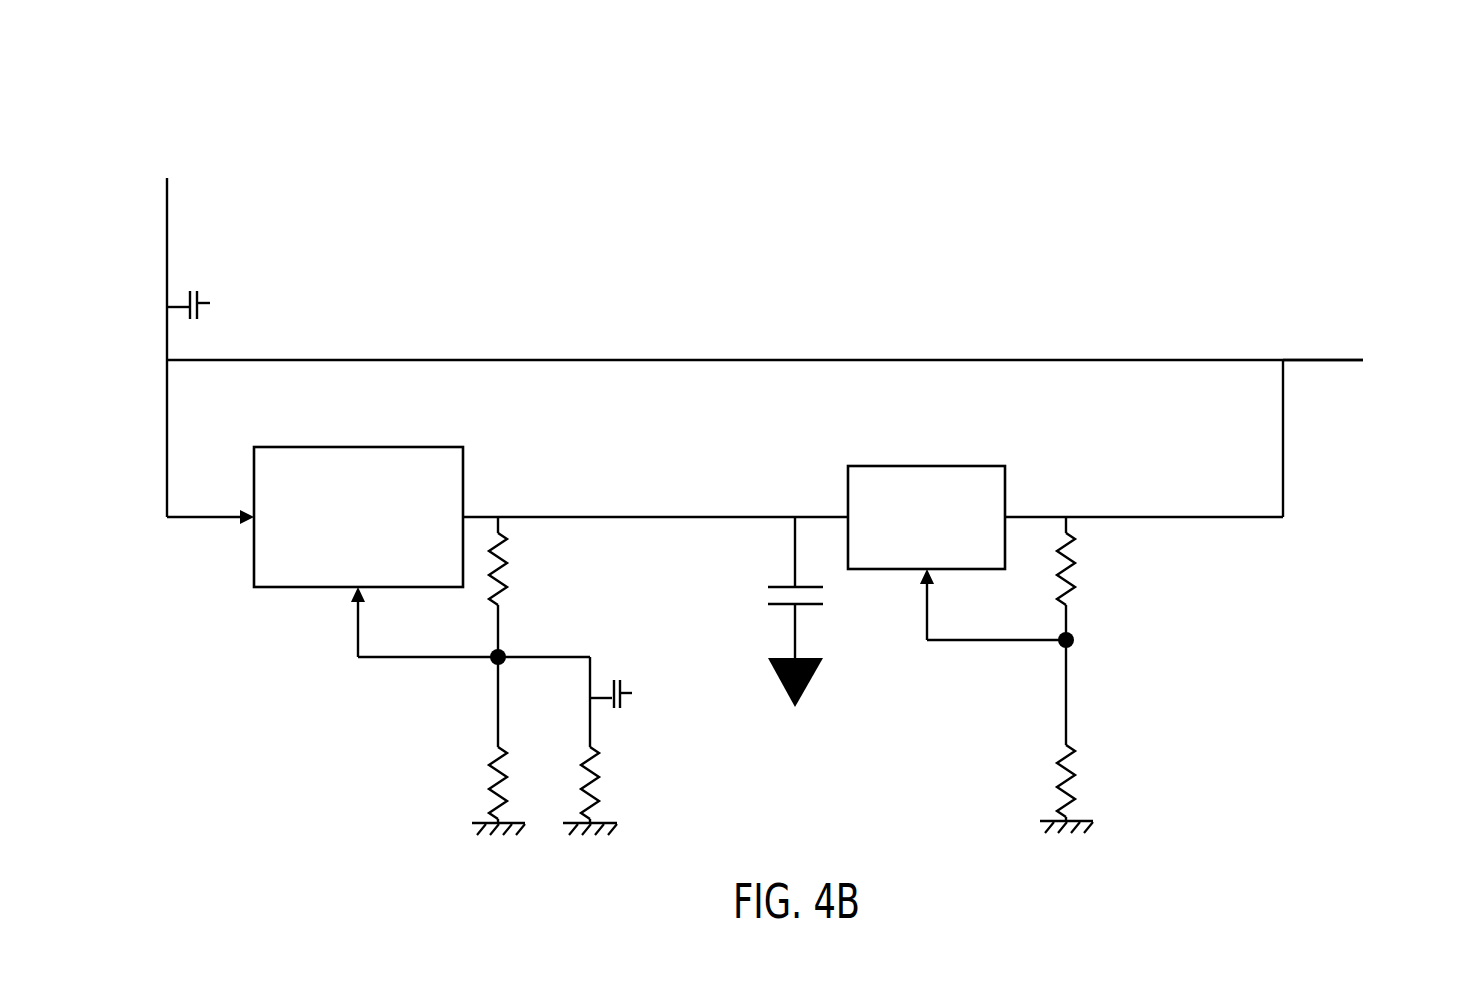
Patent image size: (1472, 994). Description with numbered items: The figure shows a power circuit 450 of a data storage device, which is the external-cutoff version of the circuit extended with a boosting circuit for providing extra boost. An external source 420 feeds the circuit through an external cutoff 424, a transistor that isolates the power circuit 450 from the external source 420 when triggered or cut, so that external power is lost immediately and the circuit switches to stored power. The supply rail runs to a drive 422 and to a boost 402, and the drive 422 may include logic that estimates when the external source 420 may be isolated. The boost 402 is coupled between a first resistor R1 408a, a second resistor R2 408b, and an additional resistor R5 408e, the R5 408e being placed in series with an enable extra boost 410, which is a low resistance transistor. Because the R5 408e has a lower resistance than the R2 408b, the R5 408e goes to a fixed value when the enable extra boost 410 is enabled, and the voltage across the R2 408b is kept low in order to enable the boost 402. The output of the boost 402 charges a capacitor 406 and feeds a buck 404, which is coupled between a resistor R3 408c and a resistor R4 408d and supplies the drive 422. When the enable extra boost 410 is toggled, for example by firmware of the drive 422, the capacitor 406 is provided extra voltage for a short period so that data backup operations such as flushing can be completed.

The power circuit 450 is at (183, 72).
The external source 420 is at (149, 173).
The external cutoff 424 is at (254, 338).
The drive 422 is at (1409, 398).
The boost 402 is at (342, 540).
The buck 404 is at (910, 541).
The capacitor 406 is at (719, 620).
The R1 408a is at (563, 597).
The R2 408b is at (563, 807).
The R3 408c is at (1129, 598).
The R4 408d is at (1129, 806).
The R5 408e is at (656, 807).
The enable extra boost 410 is at (685, 731).